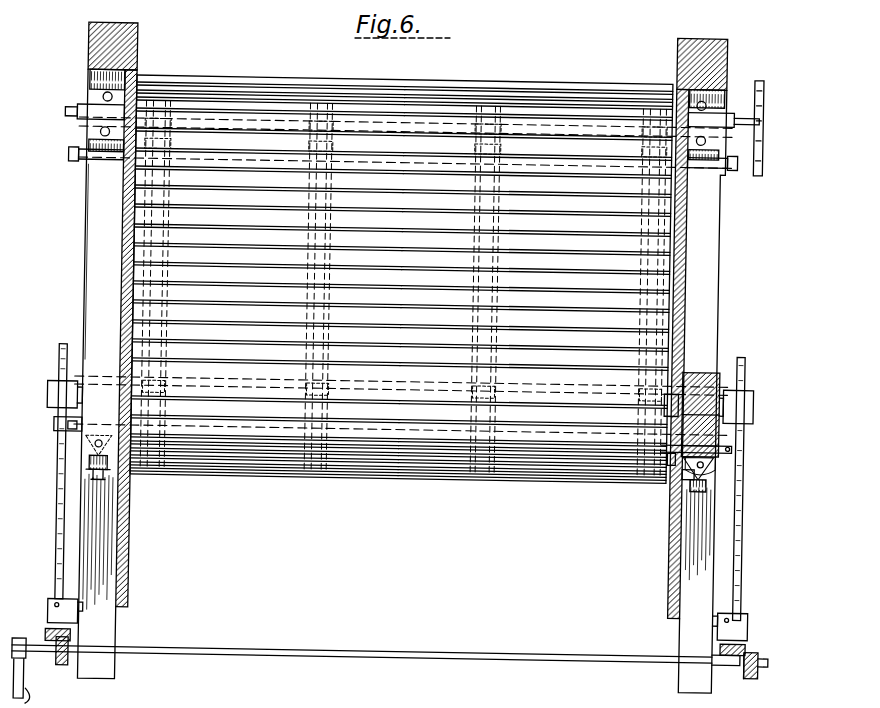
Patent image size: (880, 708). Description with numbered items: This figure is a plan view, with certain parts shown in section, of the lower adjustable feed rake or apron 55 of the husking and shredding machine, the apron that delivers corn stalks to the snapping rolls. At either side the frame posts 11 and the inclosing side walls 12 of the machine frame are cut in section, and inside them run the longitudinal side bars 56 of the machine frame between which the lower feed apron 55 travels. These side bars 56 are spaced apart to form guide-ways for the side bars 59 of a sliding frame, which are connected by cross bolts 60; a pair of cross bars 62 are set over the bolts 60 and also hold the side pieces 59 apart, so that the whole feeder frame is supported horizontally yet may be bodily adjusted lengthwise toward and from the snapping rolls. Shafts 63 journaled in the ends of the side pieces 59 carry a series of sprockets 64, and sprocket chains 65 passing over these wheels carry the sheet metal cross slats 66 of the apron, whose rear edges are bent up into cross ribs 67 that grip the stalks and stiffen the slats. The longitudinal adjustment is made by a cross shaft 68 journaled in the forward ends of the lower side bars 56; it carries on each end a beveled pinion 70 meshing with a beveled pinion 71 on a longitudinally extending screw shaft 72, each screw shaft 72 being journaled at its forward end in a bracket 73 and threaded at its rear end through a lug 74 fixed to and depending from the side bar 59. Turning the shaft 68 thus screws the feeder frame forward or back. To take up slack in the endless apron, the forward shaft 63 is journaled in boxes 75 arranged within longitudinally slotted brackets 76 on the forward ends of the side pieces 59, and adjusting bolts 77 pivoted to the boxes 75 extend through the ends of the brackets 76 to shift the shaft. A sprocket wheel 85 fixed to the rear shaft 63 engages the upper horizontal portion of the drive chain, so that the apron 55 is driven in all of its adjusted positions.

The posts 11 is at (96, 40).
The inclosing side walls 12 is at (137, 52).
The lower feed apron 55 is at (300, 84).
The longitudinal side bars 56 is at (104, 636).
The side bars 59 is at (95, 255).
The cross bolts 60 is at (210, 165).
The cross bars 62 is at (691, 368).
The shafts 63 is at (78, 116).
The sprockets 64 is at (183, 80).
The sprocket chains 65 is at (334, 202).
The cross slats 66 is at (178, 312).
The cross ribs 67 is at (655, 239).
The cross shaft 68 is at (333, 650).
The beveled pinions 70 is at (72, 667).
The beveled pinions 71 is at (55, 636).
The screw shafts 72 is at (64, 525).
The brackets 73 is at (57, 612).
The brackets or lugs 74 is at (58, 402).
The boxes 75 is at (92, 440).
The longitudinally slotted brackets 76 is at (96, 462).
The adjusting bolts 77 is at (60, 432).
The sprocket wheel 85 is at (762, 160).